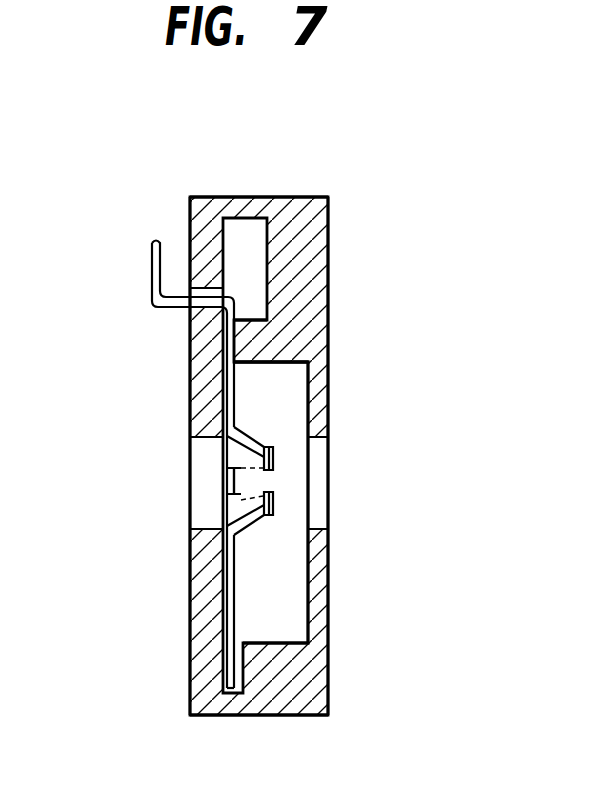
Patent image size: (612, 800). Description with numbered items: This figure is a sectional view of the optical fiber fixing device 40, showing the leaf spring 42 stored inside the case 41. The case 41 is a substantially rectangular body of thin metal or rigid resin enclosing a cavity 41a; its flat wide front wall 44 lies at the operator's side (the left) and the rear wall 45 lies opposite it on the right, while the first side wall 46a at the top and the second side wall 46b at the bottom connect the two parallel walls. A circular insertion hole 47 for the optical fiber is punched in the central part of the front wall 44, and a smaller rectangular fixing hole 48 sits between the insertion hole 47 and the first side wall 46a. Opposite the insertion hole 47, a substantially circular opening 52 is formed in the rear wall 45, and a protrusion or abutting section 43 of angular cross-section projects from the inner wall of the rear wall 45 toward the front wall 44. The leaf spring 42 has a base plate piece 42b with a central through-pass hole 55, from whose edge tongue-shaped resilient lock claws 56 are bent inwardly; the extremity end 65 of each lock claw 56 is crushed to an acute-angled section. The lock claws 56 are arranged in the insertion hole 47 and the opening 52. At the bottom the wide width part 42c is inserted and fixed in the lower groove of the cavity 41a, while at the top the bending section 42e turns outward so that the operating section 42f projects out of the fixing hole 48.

The optical fiber fixing device 40 is at (305, 195).
The case 41 is at (331, 244).
The cavity 41a is at (287, 377).
The leaf spring 42 is at (234, 617).
The base plate piece 42b is at (234, 585).
The wide width part 42c is at (238, 677).
The bending section 42e is at (163, 308).
The operating section 42f is at (156, 264).
The protrusion (abutting section) 43 is at (253, 342).
The front wall 44 is at (198, 410).
The rear wall 45 is at (328, 311).
The first side wall 46a is at (235, 197).
The second side wall 46b is at (258, 715).
The insertion hole 47 is at (215, 446).
The fixing hole 48 is at (205, 294).
The opening 52 is at (312, 446).
The through-pass hole 55 is at (241, 483).
The lock claw 56 is at (259, 453).
The extremity end 65 is at (271, 470).